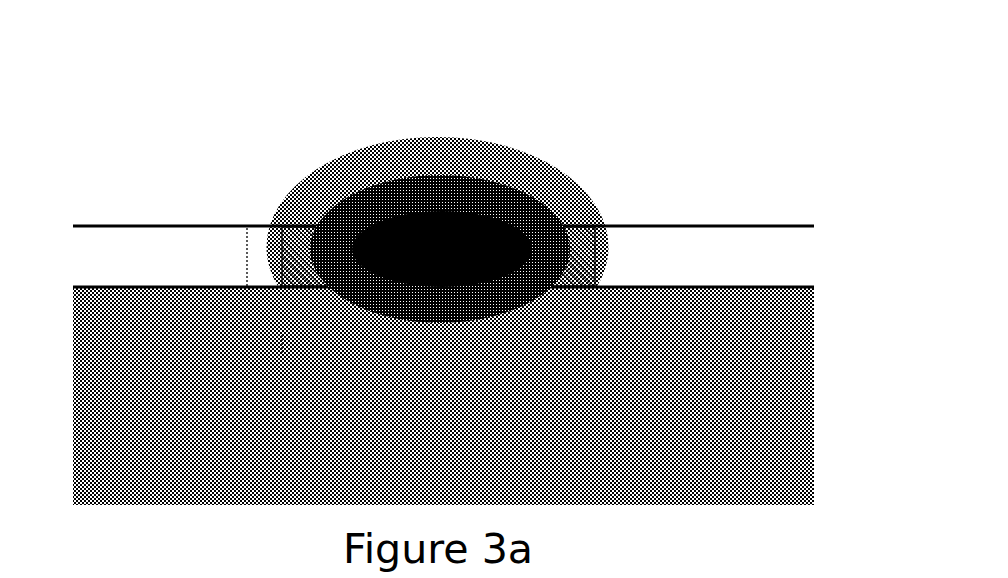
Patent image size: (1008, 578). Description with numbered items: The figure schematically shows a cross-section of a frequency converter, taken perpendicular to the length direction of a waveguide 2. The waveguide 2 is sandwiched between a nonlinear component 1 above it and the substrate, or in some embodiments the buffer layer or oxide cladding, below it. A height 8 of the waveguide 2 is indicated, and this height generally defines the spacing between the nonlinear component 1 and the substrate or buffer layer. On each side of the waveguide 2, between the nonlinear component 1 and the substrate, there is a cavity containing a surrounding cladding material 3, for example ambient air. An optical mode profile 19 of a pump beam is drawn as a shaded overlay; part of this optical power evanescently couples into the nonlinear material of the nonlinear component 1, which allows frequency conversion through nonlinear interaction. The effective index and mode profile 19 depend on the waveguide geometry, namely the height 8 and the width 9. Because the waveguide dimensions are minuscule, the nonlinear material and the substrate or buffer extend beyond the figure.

The nonlinear component 1 is at (732, 99).
The waveguide 2 is at (606, 253).
The surrounding cladding material 3 is at (128, 257).
The height of the waveguide 8 is at (247, 257).
The waveguide geometry 9 is at (442, 355).
The optical mode profile 19 is at (475, 118).